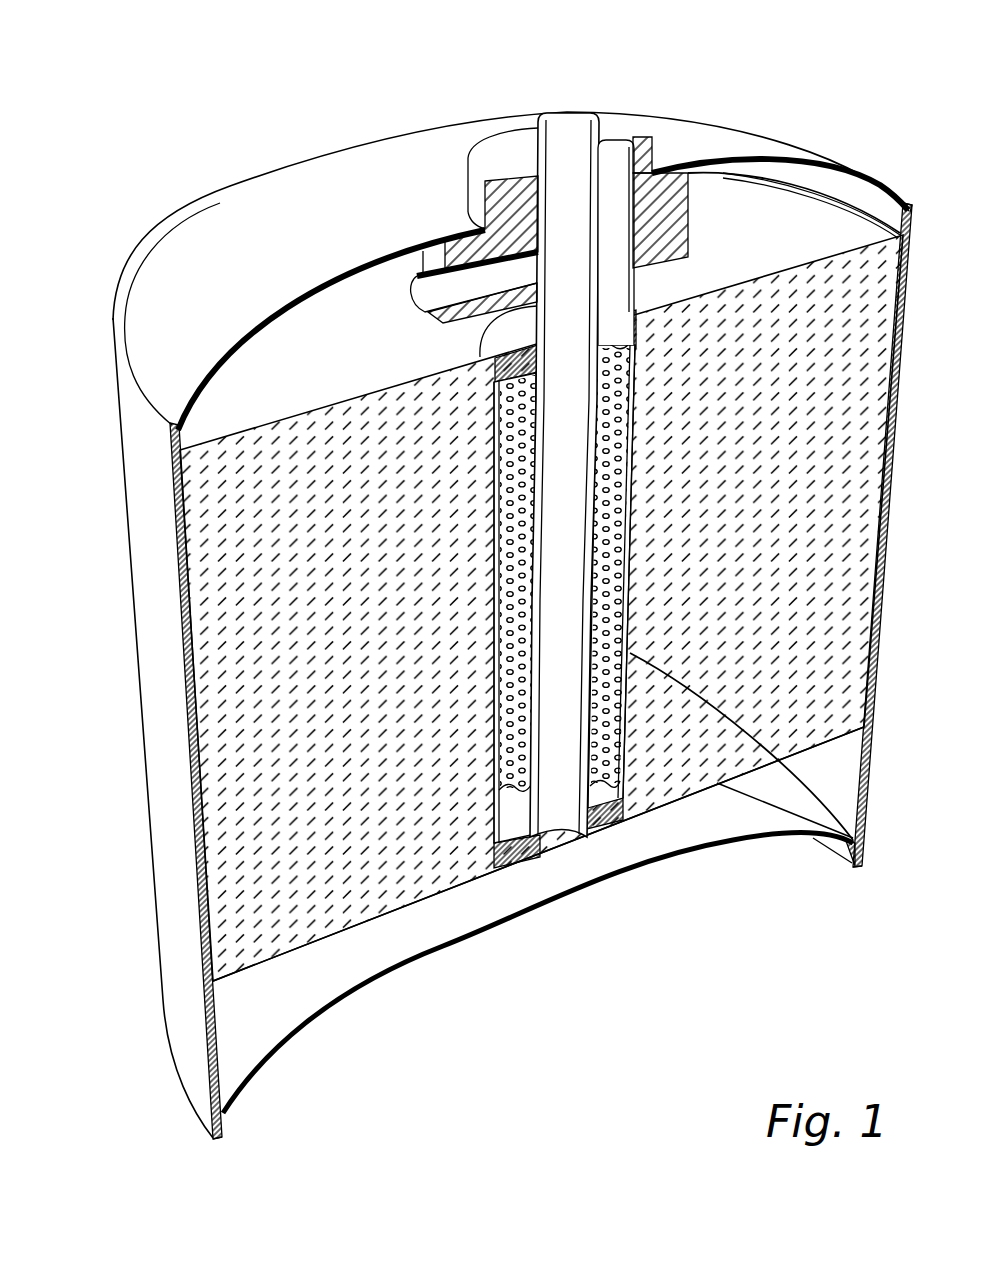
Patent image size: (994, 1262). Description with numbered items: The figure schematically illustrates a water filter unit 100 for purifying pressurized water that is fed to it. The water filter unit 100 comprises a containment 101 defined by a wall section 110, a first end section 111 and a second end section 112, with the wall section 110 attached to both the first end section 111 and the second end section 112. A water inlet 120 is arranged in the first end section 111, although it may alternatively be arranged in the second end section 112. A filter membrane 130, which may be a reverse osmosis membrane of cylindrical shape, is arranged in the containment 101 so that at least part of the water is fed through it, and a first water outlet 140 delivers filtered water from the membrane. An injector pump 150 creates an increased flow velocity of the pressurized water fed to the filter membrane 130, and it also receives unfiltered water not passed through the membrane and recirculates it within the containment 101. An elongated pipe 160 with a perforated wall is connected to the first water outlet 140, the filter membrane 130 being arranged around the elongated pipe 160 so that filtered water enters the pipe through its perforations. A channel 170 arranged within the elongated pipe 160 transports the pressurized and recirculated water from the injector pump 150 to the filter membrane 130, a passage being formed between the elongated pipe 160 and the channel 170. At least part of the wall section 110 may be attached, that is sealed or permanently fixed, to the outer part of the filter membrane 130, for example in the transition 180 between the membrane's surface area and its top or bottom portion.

The water filter unit 100 is at (238, 41).
The containment 101 is at (300, 1010).
The wall section 110 is at (157, 689).
The first end section 111 is at (230, 243).
The second end section 112 is at (547, 900).
The water inlet 120 is at (567, 122).
The filter membrane 130 is at (222, 566).
The first water outlet 140 is at (614, 148).
The injector pump 150 is at (547, 197).
The elongated pipe 160 is at (862, 813).
The channel 170 is at (597, 710).
The transition 180 is at (913, 207).